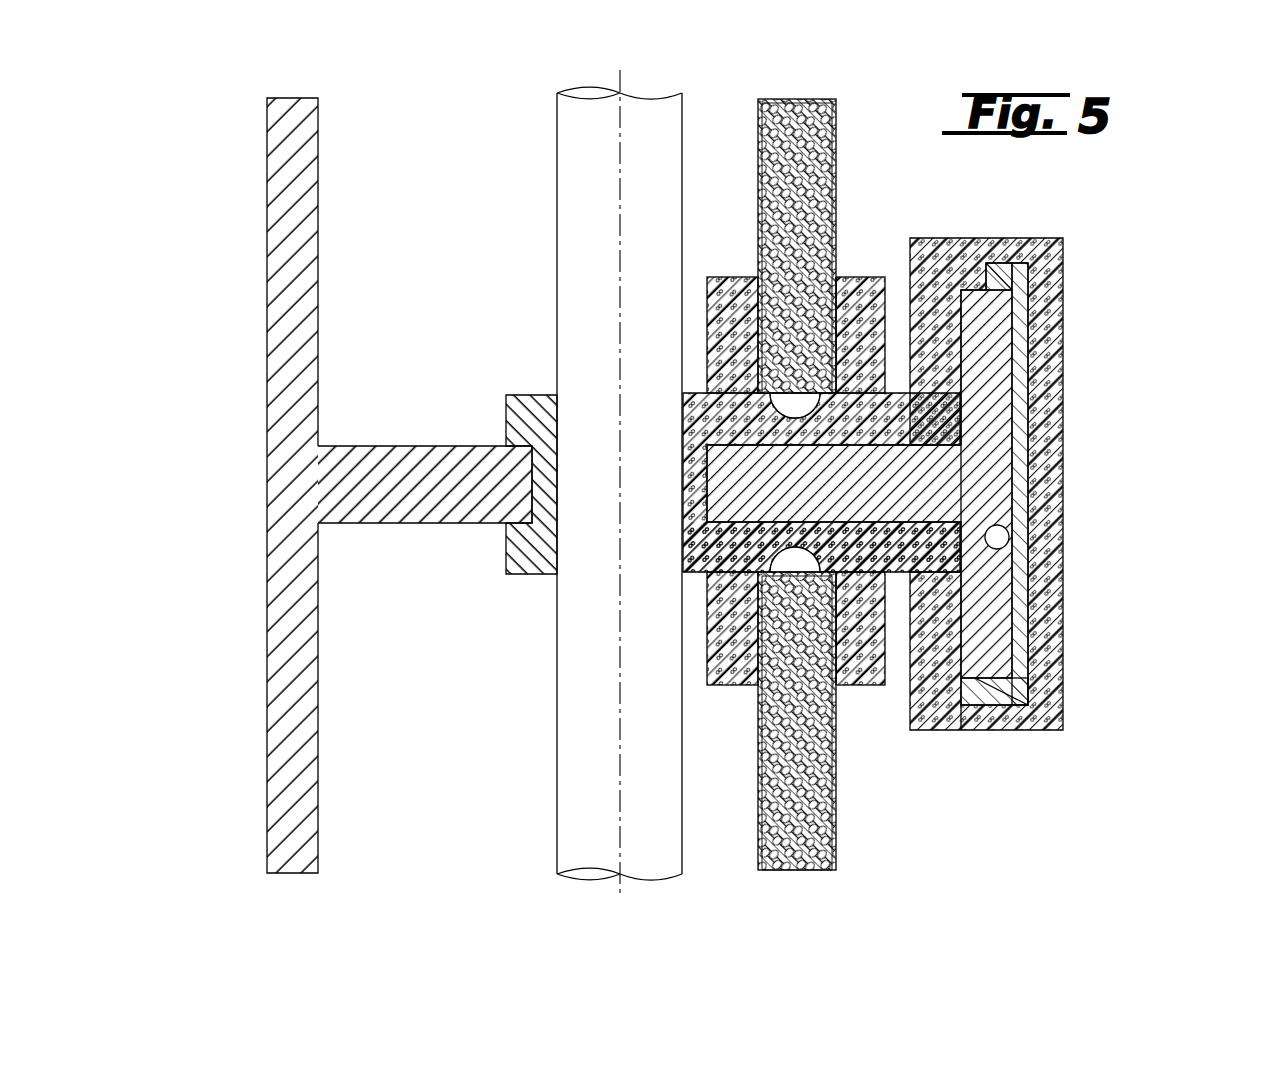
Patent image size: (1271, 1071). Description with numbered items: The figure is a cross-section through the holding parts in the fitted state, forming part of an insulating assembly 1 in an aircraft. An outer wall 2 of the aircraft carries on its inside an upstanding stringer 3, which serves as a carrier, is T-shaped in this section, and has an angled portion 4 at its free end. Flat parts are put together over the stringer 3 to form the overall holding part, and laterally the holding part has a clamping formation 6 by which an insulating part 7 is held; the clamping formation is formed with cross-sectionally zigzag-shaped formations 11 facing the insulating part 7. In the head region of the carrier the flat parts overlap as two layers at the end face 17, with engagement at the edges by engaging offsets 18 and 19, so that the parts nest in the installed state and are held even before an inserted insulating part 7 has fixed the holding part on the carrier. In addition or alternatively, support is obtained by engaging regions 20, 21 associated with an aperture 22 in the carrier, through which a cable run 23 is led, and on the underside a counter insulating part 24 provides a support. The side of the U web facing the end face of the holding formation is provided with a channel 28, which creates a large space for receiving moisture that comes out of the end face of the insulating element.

The insulating assembly 1 is at (919, 484).
The outer wall 2 is at (278, 348).
The stringer 3 is at (878, 484).
The angled portion 4 is at (988, 573).
The clamping formation 6 is at (843, 278).
The insulating part 7 is at (755, 165).
The zigzag-shaped formation 11 is at (848, 292).
The face 17 is at (1015, 523).
The engaging offset 18 is at (1004, 277).
The engaging offset 19 is at (995, 715).
The engaging region 20 is at (688, 537).
The engaging region 21 is at (690, 450).
The aperture 22 is at (532, 485).
The cable run 23 is at (565, 333).
The counter insulating part 24 is at (527, 417).
The channel 28 is at (770, 418).